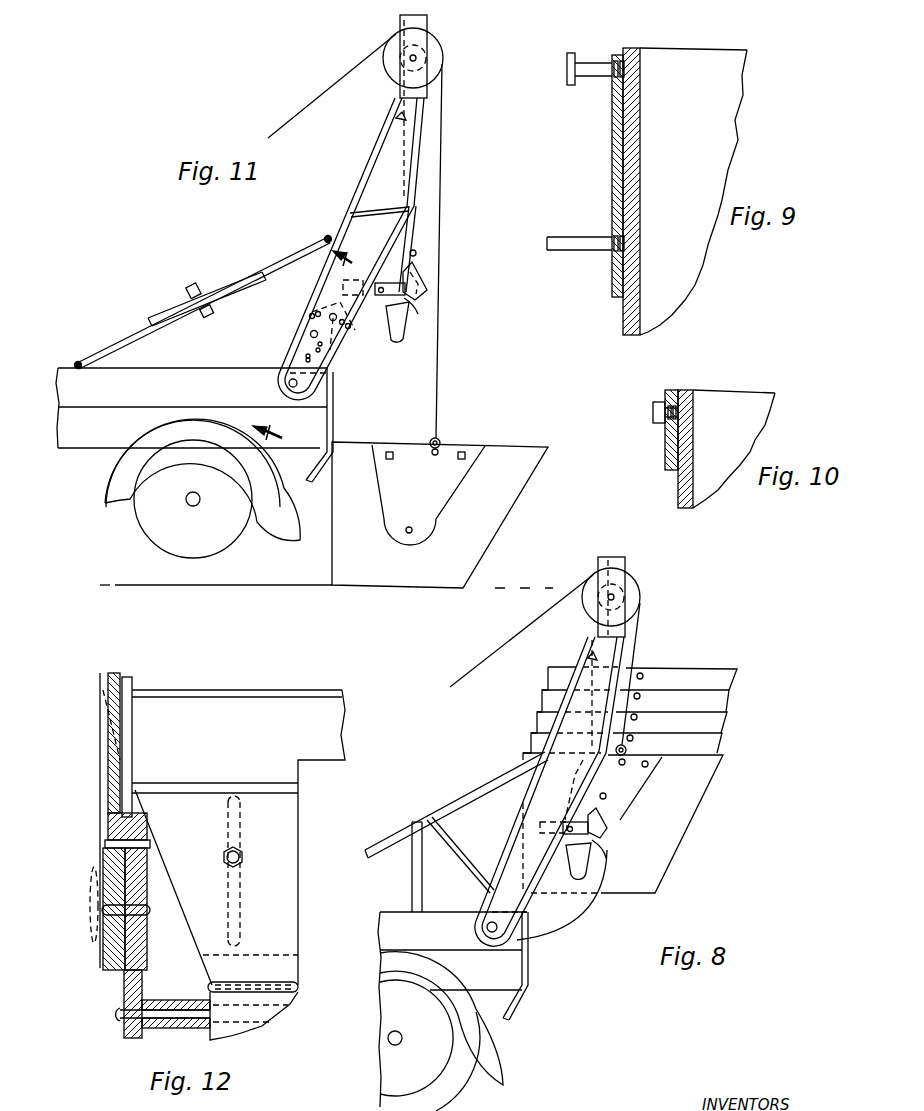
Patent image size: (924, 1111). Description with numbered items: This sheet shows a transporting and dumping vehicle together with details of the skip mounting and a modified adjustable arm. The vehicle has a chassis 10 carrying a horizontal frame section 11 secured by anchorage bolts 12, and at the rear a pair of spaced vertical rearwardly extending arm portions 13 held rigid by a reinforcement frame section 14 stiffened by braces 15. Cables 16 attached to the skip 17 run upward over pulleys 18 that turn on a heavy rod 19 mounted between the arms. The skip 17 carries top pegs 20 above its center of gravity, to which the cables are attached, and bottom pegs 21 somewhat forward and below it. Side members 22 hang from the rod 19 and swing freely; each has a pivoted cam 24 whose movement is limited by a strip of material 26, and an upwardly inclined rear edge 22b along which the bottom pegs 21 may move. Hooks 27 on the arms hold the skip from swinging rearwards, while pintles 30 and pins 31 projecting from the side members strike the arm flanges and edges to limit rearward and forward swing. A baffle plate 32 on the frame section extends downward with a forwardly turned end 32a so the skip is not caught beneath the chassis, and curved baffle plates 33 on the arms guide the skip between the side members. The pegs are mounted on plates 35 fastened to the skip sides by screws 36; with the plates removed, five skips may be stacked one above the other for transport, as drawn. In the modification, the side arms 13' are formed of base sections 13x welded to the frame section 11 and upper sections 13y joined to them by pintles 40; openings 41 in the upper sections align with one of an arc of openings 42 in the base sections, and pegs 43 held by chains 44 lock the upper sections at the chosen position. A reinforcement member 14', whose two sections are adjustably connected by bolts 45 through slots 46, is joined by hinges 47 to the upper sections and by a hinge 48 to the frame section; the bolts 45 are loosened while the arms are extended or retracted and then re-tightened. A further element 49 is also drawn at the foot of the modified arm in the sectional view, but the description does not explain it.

In FIG. 11, the chassis 10 is at (84, 449).
In FIG. 8, the chassis 10 is at (512, 980).
In FIG. 11, the horizontal frame section 11 is at (134, 378).
In FIG. 12, the horizontal frame section 11 is at (258, 1028).
In FIG. 8, the horizontal frame section 11 is at (384, 930).
In FIG. 11, the anchorage bolts 12 is at (312, 340).
In FIG. 8, the arm portions 13 is at (570, 791).
In FIG. 11, the side arms 13' is at (434, 211).
In FIG. 11, the base sections 13x is at (300, 364).
In FIG. 12, the base sections 13x is at (123, 990).
In FIG. 11, the upper sections 13y is at (378, 150).
In FIG. 12, the upper sections 13y is at (106, 818).
In FIG. 8, the reinforcement frame section 14 is at (456, 805).
In FIG. 11, the reinforcement member 14' is at (203, 303).
In FIG. 12, the reinforcement member 14' is at (253, 834).
In FIG. 8, the braces 15 is at (422, 865).
In FIG. 11, the cables 16 is at (436, 385).
In FIG. 8, the cables 16 is at (500, 648).
In FIG. 11, the skip 17 is at (488, 546).
In FIG. 9, the skip 17 is at (683, 58).
In FIG. 10, the skip 17 is at (678, 494).
In FIG. 8, the skip 17 is at (735, 746).
In FIG. 11, the pulleys 18 is at (438, 66).
In FIG. 8, the pulleys 18 is at (628, 584).
In FIG. 11, the rod 19 is at (417, 57).
In FIG. 8, the rod 19 is at (615, 598).
In FIG. 11, the top pegs 20 is at (432, 454).
In FIG. 9, the top pegs 20 is at (577, 62).
In FIG. 11, the bottom pegs 21 is at (411, 527).
In FIG. 9, the bottom pegs 21 is at (566, 242).
In FIG. 8, the bottom pegs 21 is at (596, 824).
In FIG. 11, the side members 22 is at (416, 218).
In FIG. 8, the side members 22 is at (605, 790).
In FIG. 8, the upwardly inclined rear edge 22b is at (585, 896).
In FIG. 11, the cam 24 is at (397, 286).
In FIG. 11, the strip of material 26 is at (417, 312).
In FIG. 8, the strip of material 26 is at (597, 855).
In FIG. 8, the hooks 27 is at (552, 821).
In FIG. 11, the pintles 30 is at (394, 118).
In FIG. 8, the pintles 30 is at (587, 653).
In FIG. 11, the pins 31 is at (416, 253).
In FIG. 8, the pins 31 is at (606, 796).
In FIG. 11, the baffle plate 32 is at (328, 413).
In FIG. 8, the baffle plate 32 is at (529, 969).
In FIG. 8, the forwardly turned end 32a is at (510, 1013).
In FIG. 8, the baffle plates 33 is at (568, 915).
In FIG. 9, the plates 35 is at (612, 137).
In FIG. 10, the plates 35 is at (665, 451).
In FIG. 11, the screws 36 is at (389, 451).
In FIG. 10, the screws 36 is at (653, 413).
In FIG. 11, the pintles 40 is at (311, 333).
In FIG. 12, the pintles 40 is at (101, 910).
In FIG. 11, the openings 41 is at (350, 322).
In FIG. 12, the openings 41 is at (137, 862).
In FIG. 11, the openings 42 is at (330, 316).
In FIG. 12, the openings 42 is at (147, 830).
In FIG. 11, the pegs 43 is at (345, 320).
In FIG. 12, the pegs 43 is at (148, 845).
In FIG. 11, the chains 44 is at (324, 342).
In FIG. 12, the chains 44 is at (91, 897).
In FIG. 11, the bolts 45 is at (191, 286).
In FIG. 12, the bolts 45 is at (243, 857).
In FIG. 12, the slots 46 is at (236, 906).
In FIG. 11, the hinges 47 is at (326, 237).
In FIG. 12, the hinges 47 is at (130, 693).
In FIG. 11, the hinge 48 is at (86, 357).
In FIG. 12, the hinge 48 is at (300, 987).
In FIG. 12, the plate 49 is at (152, 1001).